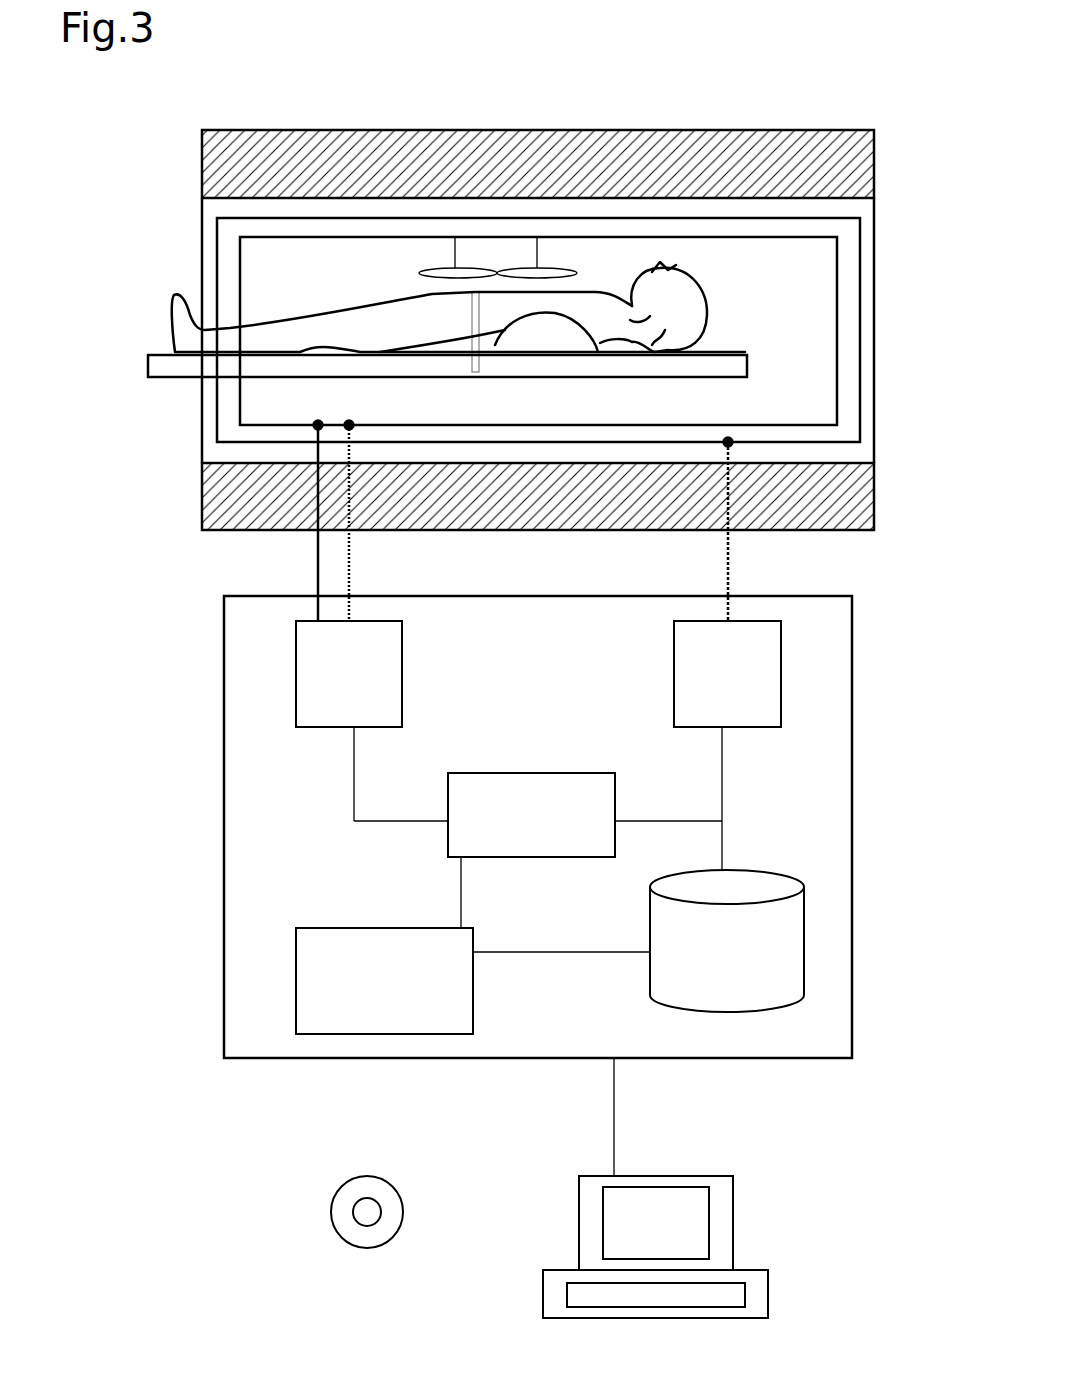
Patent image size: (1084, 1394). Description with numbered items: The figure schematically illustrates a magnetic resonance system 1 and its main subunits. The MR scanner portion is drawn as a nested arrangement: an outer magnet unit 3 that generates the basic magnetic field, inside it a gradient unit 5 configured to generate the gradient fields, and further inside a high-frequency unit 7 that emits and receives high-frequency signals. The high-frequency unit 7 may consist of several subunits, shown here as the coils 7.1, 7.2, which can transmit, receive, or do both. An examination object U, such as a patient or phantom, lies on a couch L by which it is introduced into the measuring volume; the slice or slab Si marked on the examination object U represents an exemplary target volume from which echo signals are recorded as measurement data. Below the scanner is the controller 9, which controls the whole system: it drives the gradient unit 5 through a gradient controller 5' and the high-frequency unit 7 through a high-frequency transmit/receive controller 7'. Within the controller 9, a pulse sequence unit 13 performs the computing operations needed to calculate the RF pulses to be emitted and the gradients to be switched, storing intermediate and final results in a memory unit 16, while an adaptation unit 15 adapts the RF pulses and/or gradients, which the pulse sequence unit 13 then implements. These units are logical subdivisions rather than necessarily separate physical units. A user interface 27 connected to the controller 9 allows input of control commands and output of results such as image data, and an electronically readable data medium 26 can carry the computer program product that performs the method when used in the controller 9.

The magnetic resonance system 1 is at (770, 77).
The magnet unit 3 is at (538, 130).
The gradient unit 5 is at (575, 330).
The high-frequency unit 7 is at (586, 336).
The coil 7.1 is at (445, 273).
The coil 7.2 is at (540, 273).
The slice or slab Si is at (481, 378).
The examination object U is at (173, 292).
The couch L is at (146, 370).
The controller 9 is at (852, 646).
The high-frequency transmit/receive controller 7' is at (373, 573).
The gradient controller 5' is at (750, 582).
The pulse sequence unit 13 is at (583, 773).
The adaptation unit 15 is at (318, 905).
The memory unit 16 is at (773, 868).
The electronically readable data medium 26 is at (333, 1200).
The user interface 27 is at (735, 1212).